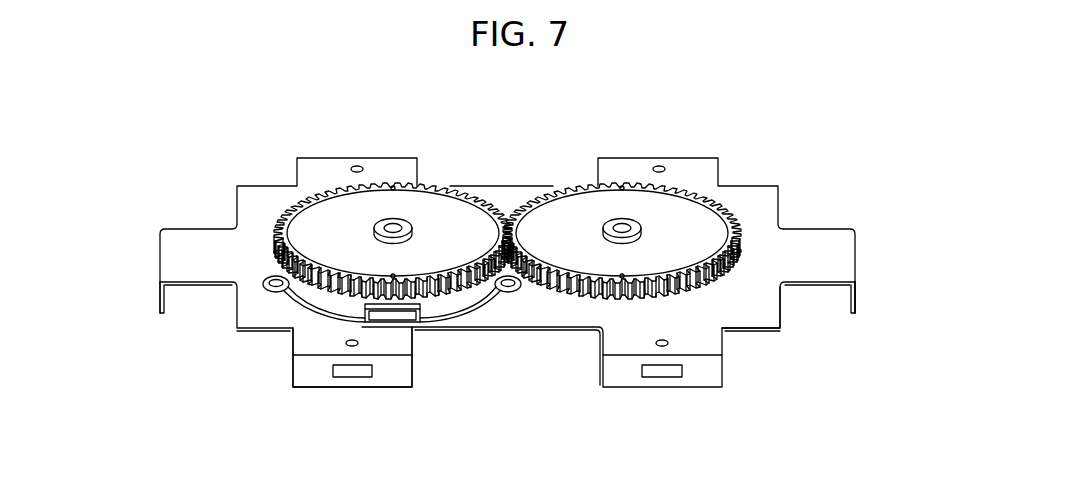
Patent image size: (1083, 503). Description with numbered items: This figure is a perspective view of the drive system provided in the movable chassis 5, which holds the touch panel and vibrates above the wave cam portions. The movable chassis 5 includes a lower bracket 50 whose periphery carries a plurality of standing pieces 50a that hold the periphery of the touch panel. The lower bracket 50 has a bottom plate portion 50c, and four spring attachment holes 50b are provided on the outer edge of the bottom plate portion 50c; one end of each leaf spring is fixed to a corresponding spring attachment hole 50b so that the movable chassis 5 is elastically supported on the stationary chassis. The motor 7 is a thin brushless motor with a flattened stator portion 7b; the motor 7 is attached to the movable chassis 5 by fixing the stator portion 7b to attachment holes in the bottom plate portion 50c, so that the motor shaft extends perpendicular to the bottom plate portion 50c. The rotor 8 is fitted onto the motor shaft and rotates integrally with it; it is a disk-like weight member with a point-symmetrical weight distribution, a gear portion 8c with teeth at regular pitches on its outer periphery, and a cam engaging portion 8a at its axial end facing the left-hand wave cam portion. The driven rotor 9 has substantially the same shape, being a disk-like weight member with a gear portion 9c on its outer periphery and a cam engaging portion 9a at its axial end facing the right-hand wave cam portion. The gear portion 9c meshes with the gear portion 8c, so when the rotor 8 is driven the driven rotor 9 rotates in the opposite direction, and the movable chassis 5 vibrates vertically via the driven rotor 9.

The movable chassis 5 is at (498, 268).
The lower bracket 50 is at (236, 224).
The standing pieces 50a is at (390, 378).
The spring attachment holes 50b is at (667, 343).
The bottom plate portion 50c is at (745, 310).
The motor 7 is at (369, 331).
The stator portion 7b is at (305, 297).
The rotor 8 is at (377, 193).
The cam engaging portion 8a is at (390, 220).
The gear portion 8c is at (434, 182).
The driven rotor 9 is at (645, 201).
The cam engaging portion 9a is at (628, 174).
The gear portion 9c is at (622, 203).